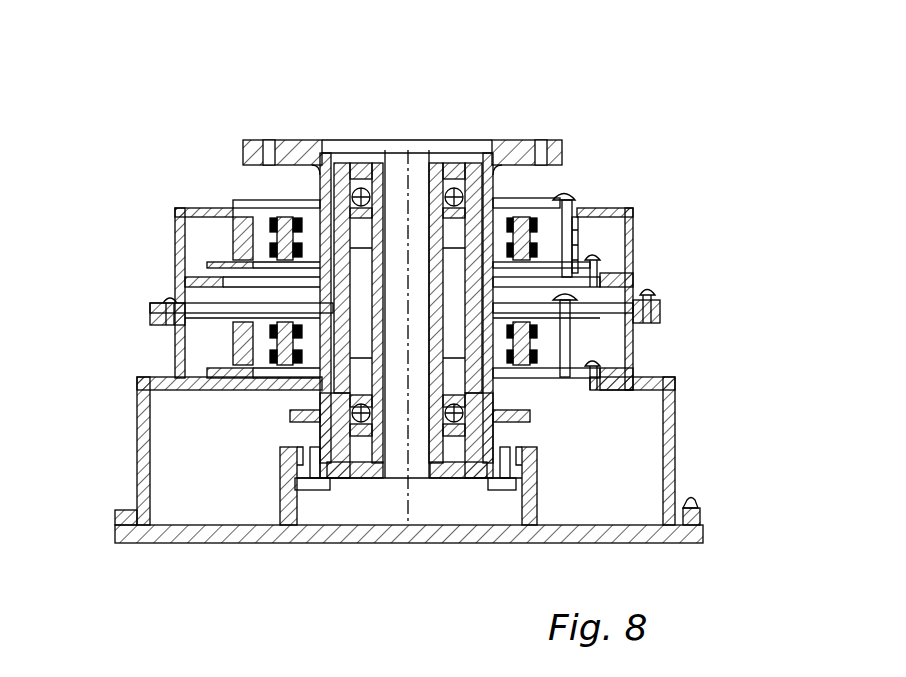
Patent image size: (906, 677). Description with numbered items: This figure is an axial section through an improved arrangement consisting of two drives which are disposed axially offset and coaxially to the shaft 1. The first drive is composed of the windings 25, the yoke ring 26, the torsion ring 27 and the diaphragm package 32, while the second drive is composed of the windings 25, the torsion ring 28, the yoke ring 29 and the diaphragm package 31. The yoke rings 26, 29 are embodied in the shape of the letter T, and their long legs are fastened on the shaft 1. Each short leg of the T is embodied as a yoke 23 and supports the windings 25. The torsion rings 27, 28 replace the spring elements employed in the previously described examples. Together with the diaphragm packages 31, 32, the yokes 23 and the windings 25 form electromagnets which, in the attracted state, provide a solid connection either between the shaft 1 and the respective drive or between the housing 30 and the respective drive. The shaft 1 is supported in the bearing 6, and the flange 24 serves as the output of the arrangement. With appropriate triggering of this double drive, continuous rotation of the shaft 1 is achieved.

The shaft 1 is at (397, 167).
The bearing 6 is at (458, 180).
The yoke 23 is at (193, 249).
The flange for the output 24 is at (496, 146).
The windings 25 is at (642, 283).
The yoke ring 26 is at (583, 203).
The torsion ring 27 is at (646, 245).
The torsion ring 28 is at (578, 330).
The yoke ring 29 is at (537, 342).
The housing 30 is at (634, 358).
The diaphragm package 31 is at (273, 360).
The diaphragm package 32 is at (273, 255).